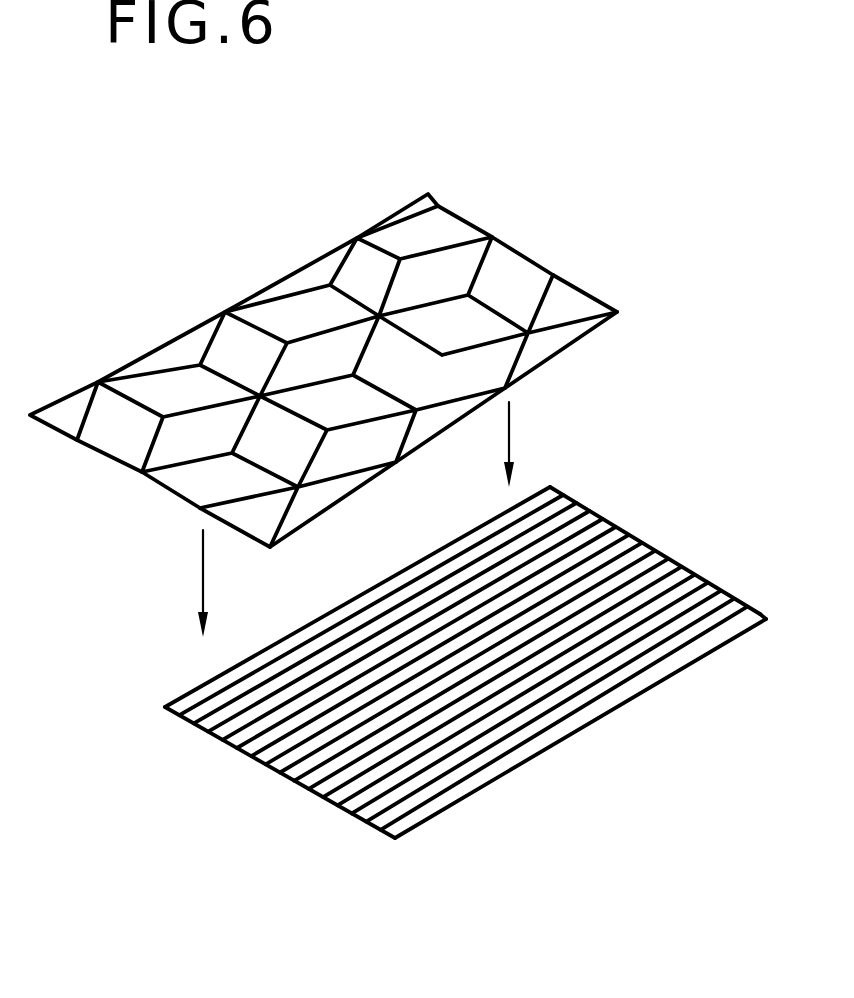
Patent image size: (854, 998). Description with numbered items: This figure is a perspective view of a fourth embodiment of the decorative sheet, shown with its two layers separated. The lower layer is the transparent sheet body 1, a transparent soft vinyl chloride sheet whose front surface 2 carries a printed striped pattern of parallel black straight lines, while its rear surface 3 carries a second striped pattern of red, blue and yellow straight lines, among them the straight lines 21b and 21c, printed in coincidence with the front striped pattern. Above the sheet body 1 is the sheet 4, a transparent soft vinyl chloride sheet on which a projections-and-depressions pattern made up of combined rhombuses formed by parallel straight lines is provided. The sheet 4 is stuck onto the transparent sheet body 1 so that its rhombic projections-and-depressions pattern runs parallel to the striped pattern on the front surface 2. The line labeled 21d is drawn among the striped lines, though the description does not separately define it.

The sheet 4 is at (577, 287).
The transparent sheet body 1 is at (488, 721).
The front surface 2 is at (760, 614).
The rear surface 3 is at (752, 627).
The straight line 21b is at (372, 825).
The straight line 21c is at (355, 817).
The groove 21d is at (385, 838).